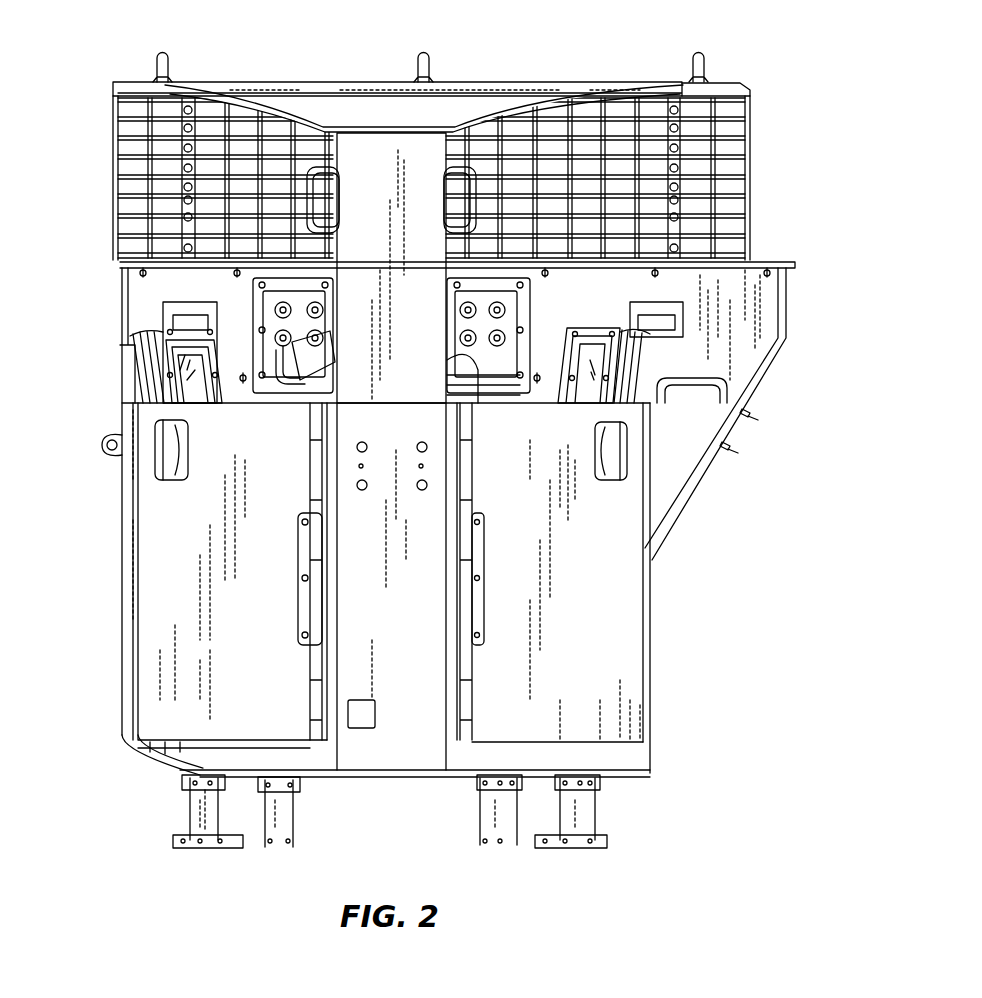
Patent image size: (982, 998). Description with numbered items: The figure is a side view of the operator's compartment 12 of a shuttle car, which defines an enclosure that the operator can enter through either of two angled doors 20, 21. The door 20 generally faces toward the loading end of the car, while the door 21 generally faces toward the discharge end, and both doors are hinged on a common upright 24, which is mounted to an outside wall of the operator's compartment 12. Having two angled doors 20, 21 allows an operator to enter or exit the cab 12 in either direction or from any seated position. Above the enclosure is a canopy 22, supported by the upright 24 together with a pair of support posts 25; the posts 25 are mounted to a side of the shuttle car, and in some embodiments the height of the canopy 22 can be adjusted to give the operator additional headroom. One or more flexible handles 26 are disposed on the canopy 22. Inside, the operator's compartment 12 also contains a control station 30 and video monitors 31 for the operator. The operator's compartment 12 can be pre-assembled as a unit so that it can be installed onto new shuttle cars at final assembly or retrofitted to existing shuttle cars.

The operator's compartment 12 is at (793, 128).
The door 20 is at (600, 615).
The door 21 is at (183, 595).
The canopy 22 is at (468, 100).
The upright 24 is at (373, 163).
The support posts 25 is at (167, 128).
The flexible handles 26 is at (215, 127).
The control station 30 is at (277, 322).
The video monitors 31 is at (190, 387).